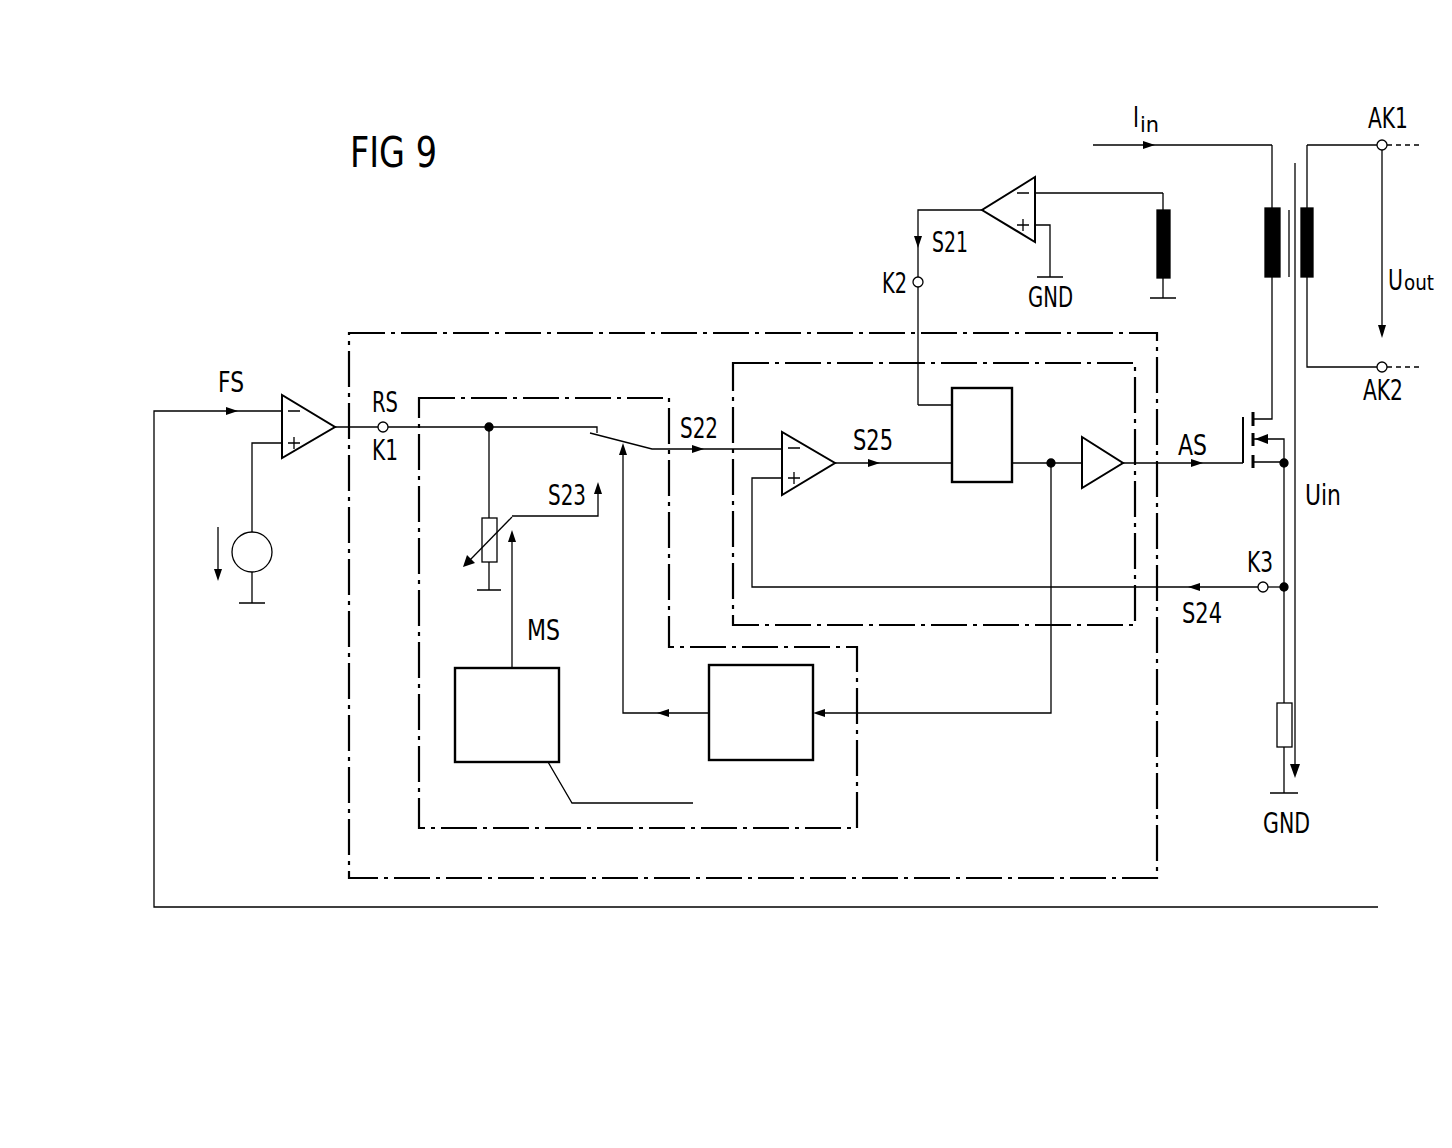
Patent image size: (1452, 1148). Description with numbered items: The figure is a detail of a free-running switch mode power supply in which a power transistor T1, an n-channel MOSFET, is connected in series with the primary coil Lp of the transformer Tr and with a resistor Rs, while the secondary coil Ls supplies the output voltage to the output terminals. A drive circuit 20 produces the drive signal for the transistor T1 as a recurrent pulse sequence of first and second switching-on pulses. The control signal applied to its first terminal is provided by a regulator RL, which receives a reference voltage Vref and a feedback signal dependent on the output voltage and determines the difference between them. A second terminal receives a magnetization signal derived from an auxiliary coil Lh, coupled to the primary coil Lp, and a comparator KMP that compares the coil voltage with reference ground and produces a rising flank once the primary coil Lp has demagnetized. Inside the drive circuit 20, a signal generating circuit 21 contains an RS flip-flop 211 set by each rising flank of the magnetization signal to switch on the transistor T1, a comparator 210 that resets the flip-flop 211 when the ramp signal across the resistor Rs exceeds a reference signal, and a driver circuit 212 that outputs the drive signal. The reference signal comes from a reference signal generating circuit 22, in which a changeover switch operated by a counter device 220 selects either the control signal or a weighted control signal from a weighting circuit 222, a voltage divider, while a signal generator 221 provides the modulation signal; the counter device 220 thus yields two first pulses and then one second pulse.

The drive circuit 20 is at (636, 333).
The signal generating circuit 21 is at (799, 363).
The reference signal generating circuit 22 is at (548, 398).
The comparator 210 is at (808, 489).
The RS flip-flop 211 is at (985, 482).
The driver circuit 212 is at (1098, 480).
The counter device 220 is at (760, 760).
The signal generator 221 is at (508, 762).
The weighting circuit 222 is at (483, 536).
The regulator RL is at (299, 394).
The reference voltage Vref is at (227, 523).
The comparator KMP is at (1008, 190).
The power transistor T1 is at (1252, 415).
The transformer Tr is at (1285, 114).
The primary coil Lp is at (1265, 244).
The secondary coil Ls is at (1313, 244).
The auxiliary coil Lh is at (1157, 238).
The resistor Rs is at (1277, 722).